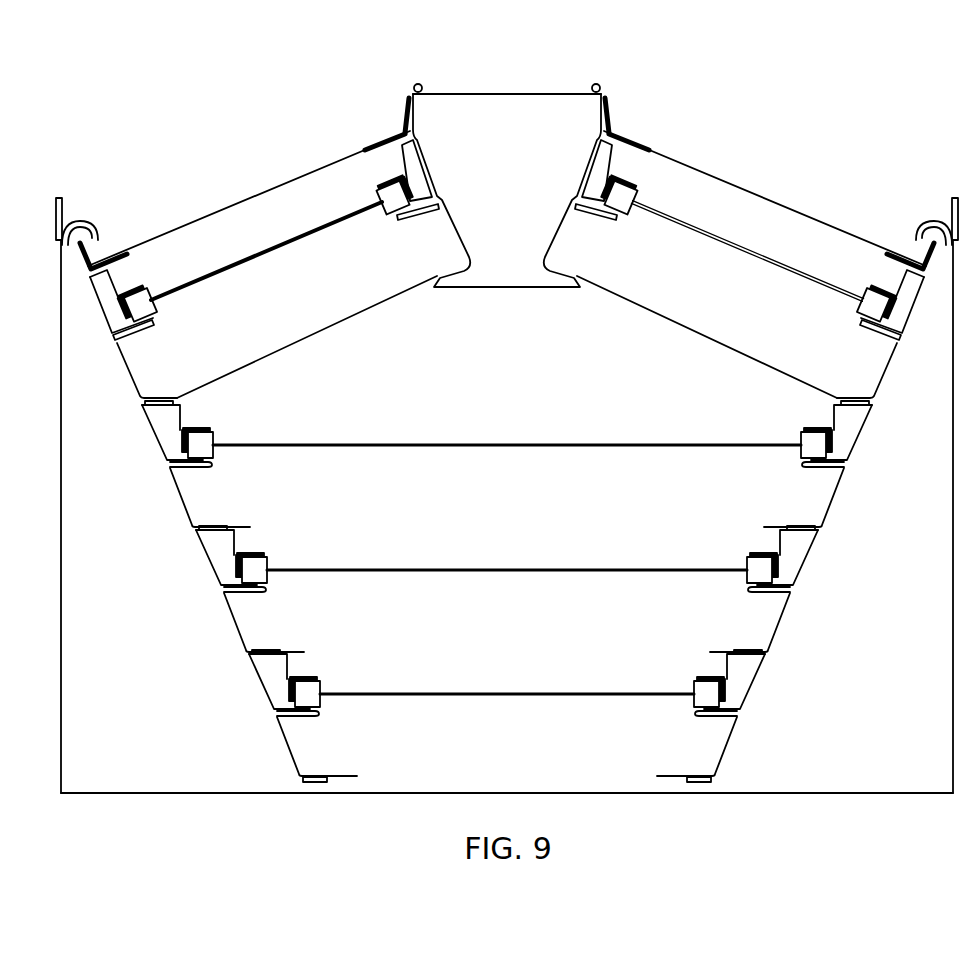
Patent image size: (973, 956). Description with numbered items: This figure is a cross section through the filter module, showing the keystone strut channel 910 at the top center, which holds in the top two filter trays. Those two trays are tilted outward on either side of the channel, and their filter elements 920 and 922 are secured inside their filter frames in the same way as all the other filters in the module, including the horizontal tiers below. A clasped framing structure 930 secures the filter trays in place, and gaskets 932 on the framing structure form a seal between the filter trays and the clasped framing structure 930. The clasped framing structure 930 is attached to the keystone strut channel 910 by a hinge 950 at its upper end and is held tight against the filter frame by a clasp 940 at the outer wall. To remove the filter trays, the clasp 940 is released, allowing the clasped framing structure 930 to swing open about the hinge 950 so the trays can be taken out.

The keystone strut channel 910 is at (460, 130).
The filter element 920 is at (187, 290).
The filter element 922 is at (662, 220).
The clasped framing structure 930 is at (110, 262).
The gasket 932 is at (121, 257).
The clasp 940 is at (80, 220).
The hinge 950 is at (414, 86).